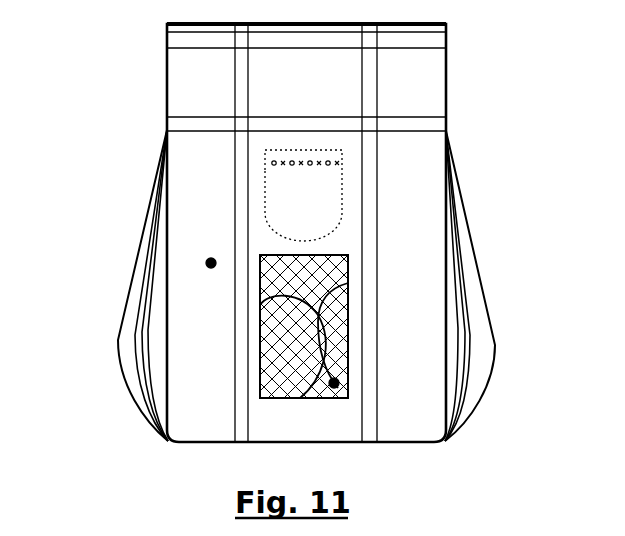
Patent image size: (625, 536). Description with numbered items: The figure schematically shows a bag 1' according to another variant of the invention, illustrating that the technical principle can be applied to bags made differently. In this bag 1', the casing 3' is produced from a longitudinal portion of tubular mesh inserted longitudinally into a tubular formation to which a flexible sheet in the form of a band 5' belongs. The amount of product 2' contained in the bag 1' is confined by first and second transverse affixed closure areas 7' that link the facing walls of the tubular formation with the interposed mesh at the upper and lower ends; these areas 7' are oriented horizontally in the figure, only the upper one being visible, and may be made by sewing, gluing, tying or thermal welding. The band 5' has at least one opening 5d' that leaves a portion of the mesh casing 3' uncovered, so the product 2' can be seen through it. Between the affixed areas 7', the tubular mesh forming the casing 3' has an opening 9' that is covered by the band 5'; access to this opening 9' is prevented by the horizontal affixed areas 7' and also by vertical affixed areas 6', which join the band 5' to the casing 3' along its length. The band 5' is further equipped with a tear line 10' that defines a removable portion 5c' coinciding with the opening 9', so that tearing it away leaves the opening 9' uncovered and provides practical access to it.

The bag 1' is at (383, 233).
The product 2' is at (415, 331).
The casing 3' is at (451, 400).
The band 5' is at (126, 298).
The removable portion 5c' is at (188, 217).
The opening 5d' is at (147, 360).
The vertical affixed areas 6' is at (314, 260).
The transverse affixed closure areas 7' is at (238, 71).
The opening 9' is at (184, 150).
The tear line 10' is at (185, 195).